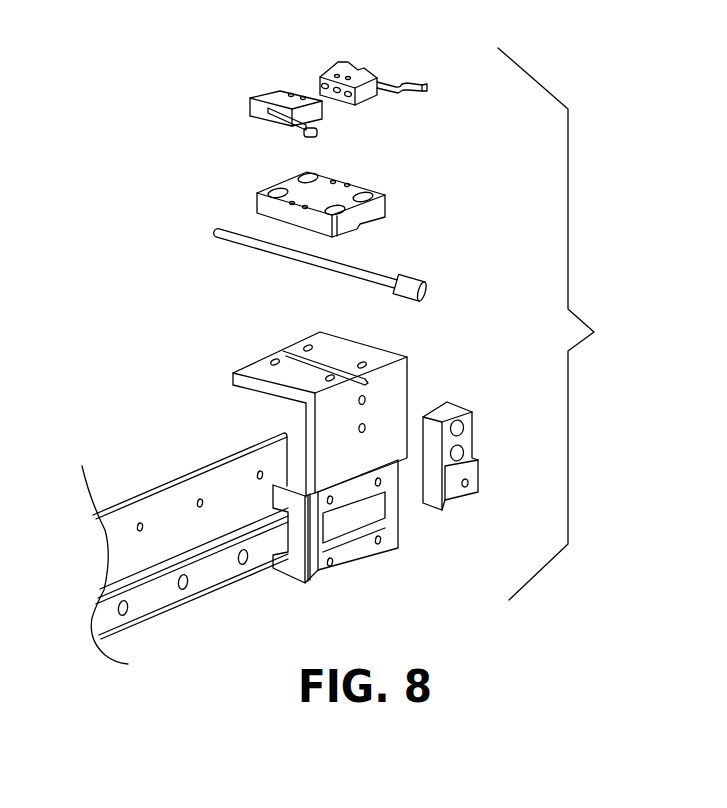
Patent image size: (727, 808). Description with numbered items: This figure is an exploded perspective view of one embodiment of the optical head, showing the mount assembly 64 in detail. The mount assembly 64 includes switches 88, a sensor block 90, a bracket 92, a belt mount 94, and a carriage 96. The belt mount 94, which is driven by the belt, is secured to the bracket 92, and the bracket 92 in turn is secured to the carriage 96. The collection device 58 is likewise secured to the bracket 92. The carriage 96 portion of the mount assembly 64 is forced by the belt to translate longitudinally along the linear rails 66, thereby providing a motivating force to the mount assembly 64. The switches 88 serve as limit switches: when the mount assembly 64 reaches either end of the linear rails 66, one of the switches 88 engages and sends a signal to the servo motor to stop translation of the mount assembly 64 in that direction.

The collection device 58 is at (427, 293).
The mount assembly 64 is at (566, 324).
The linear rails 66 is at (177, 500).
The switches 88 is at (278, 98).
The sensor block 90 is at (357, 187).
The bracket 92 is at (400, 385).
The belt mount 94 is at (468, 433).
The carriage 96 is at (393, 523).